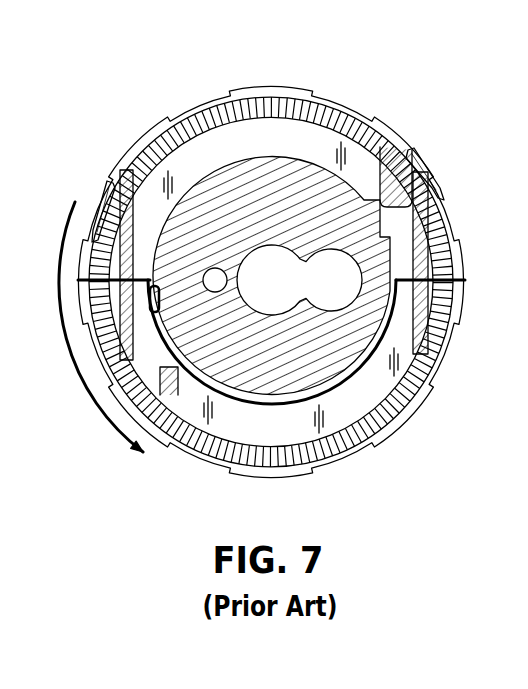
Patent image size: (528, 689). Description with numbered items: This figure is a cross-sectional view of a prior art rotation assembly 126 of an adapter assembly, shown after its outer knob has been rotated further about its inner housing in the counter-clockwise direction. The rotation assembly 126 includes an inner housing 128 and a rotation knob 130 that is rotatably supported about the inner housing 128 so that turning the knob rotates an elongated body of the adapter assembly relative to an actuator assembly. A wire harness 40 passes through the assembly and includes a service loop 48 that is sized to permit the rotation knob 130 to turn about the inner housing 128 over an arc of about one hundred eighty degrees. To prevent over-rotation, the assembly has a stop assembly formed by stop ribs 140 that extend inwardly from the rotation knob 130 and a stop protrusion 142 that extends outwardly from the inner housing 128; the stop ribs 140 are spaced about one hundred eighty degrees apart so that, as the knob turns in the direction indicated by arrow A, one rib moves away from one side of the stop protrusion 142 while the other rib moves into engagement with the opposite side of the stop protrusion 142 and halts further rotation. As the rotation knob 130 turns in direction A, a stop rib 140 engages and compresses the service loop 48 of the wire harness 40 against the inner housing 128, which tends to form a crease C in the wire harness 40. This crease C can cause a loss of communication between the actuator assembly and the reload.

The rotation assembly 126 is at (282, 66).
The inner housing 128 is at (203, 168).
The rotation knob 130 is at (349, 96).
The stop rib 140 is at (380, 202).
The stop protrusion 142 is at (372, 201).
The wire harness 40 is at (430, 273).
The service loop 48 is at (152, 309).
The direction of rotation A is at (72, 217).
The crease C is at (110, 420).